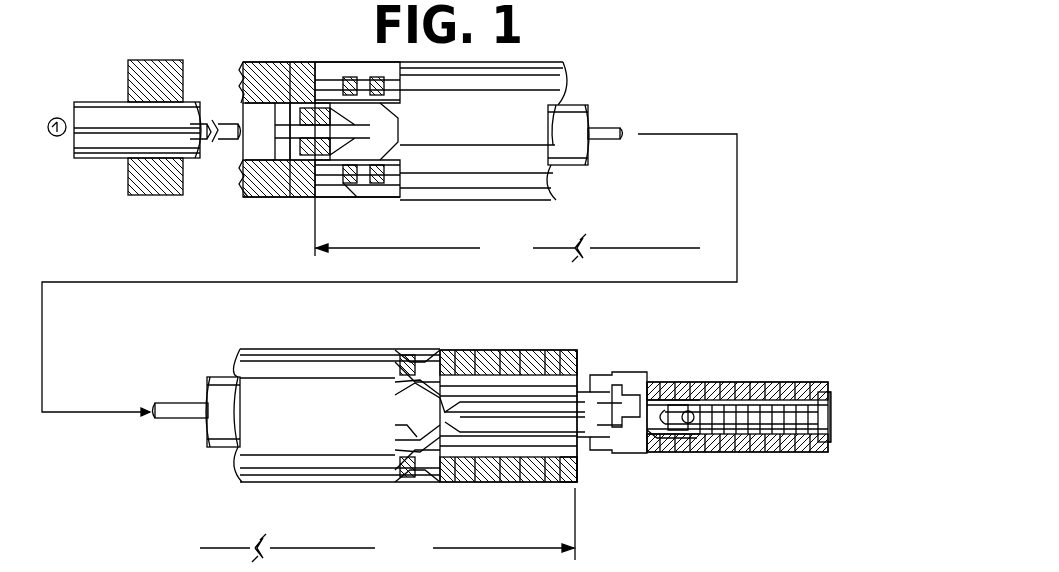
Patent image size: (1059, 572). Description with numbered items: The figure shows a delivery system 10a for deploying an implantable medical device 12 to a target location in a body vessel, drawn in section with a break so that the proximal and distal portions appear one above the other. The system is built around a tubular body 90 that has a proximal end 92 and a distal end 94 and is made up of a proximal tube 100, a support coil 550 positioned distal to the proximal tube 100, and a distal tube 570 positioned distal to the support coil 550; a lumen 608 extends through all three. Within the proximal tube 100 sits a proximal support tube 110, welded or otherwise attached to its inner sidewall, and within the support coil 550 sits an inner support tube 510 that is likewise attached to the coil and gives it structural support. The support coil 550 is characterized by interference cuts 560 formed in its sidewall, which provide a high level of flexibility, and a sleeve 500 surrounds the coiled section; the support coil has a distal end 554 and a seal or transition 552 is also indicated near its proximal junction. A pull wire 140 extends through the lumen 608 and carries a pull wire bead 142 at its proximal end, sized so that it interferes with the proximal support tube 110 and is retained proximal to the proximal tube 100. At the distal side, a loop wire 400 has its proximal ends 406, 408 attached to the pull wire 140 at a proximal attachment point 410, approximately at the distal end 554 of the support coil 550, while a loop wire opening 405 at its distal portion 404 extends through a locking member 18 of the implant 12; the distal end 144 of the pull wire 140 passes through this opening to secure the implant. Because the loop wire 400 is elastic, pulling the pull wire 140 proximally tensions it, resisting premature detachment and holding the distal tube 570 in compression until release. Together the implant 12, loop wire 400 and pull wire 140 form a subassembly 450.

The cable assembly 10a is at (688, 112).
The implantable medical device 12 is at (793, 384).
The locking member 18 is at (642, 384).
The tubular body 90 is at (265, 70).
The proximal end 92 is at (135, 206).
The distal end 94 is at (580, 383).
The proximal tube 100 is at (160, 175).
The proximal support tube 110 is at (96, 110).
The pull wire 140 is at (293, 125).
The pull wire bead 142 is at (54, 136).
The distal end 144 is at (667, 436).
The loop wire 400 is at (534, 376).
The distal portion 404 is at (657, 448).
The loop wire opening 405 is at (647, 388).
The loop wire proximal end 406 is at (410, 396).
The loop wire proximal end 408 is at (400, 457).
The proximal attachment point 410 is at (447, 372).
The subassembly 450 is at (589, 388).
The sleeve 500 is at (540, 72).
The inner support tube 510 is at (395, 425).
The support coil 550 is at (450, 379).
The seal 552 is at (380, 183).
The distal end 554 is at (548, 482).
The interference cuts 560 is at (417, 360).
The distal tube 570 is at (580, 478).
The lumen 608 is at (283, 152).